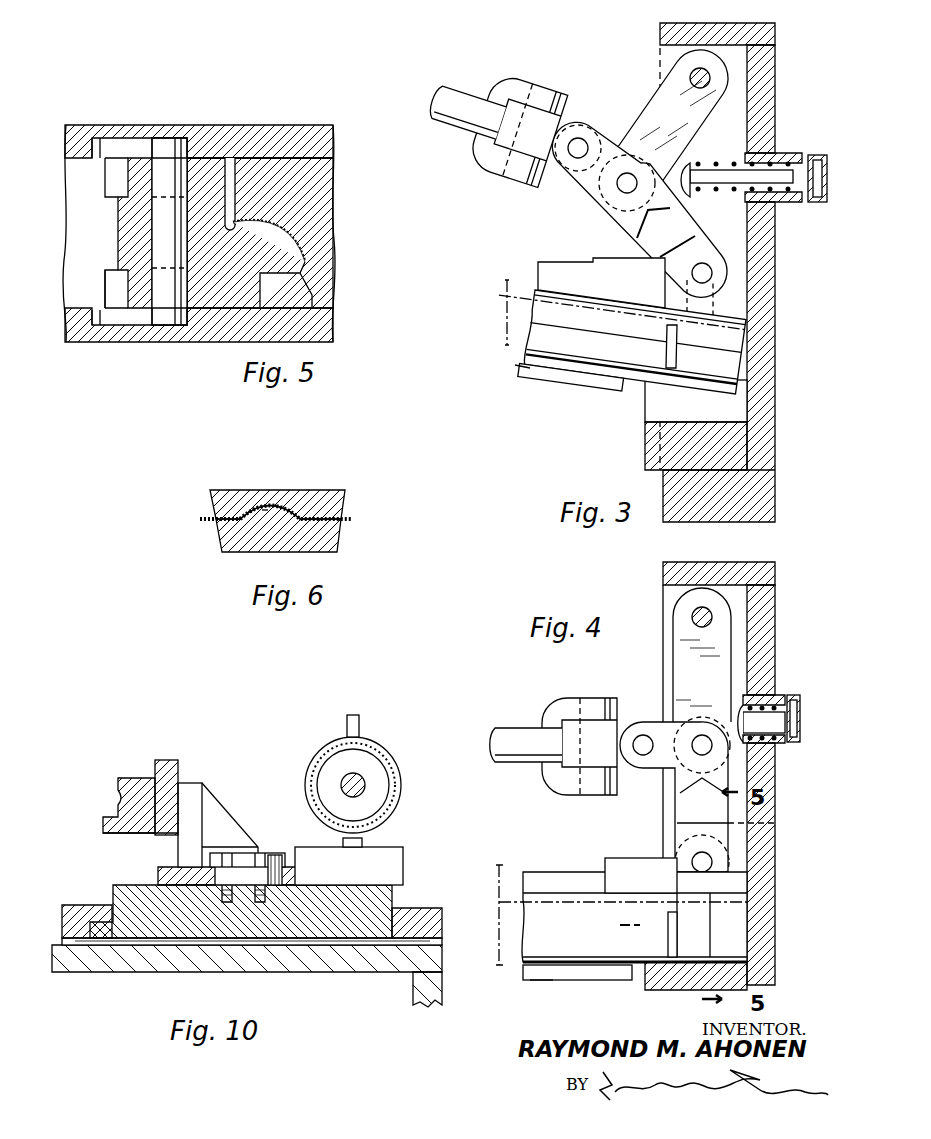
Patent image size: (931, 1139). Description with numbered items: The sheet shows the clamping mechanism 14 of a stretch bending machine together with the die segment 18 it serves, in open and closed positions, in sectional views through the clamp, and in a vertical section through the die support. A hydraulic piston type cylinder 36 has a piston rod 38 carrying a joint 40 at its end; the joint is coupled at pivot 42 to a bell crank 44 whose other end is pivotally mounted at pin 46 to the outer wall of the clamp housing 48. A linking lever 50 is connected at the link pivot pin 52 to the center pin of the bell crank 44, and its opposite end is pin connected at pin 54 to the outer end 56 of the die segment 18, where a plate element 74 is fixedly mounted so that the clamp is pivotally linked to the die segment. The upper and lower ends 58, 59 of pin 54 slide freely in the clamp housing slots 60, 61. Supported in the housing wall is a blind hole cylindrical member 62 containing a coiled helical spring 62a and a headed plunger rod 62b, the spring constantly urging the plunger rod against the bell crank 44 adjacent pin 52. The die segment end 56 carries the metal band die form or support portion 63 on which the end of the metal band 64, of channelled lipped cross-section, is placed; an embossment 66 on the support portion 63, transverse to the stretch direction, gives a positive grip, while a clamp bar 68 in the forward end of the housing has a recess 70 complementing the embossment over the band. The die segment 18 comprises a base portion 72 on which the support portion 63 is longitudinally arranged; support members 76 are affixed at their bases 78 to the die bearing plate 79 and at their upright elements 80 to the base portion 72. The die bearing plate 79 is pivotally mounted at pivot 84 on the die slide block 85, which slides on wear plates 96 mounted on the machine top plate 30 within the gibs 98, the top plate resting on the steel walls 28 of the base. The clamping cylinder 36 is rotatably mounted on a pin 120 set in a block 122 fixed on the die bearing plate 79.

In FIG. 5, the clamping mechanism 14 is at (261, 120).
In FIG. 3, the clamping mechanism 14 is at (784, 96).
In FIG. 4, the clamping mechanism 14 is at (784, 606).
In FIG. 3, the die segment 18 is at (527, 375).
In FIG. 4, the die segment 18 is at (550, 989).
In FIG. 10, the die segment 18 is at (175, 758).
In FIG. 10, the steel walls 28 is at (443, 988).
In FIG. 10, the top plate 30 is at (356, 970).
In FIG. 10, the hydraulic piston type cylinder 36 is at (368, 748).
In FIG. 3, the piston rod 38 is at (468, 86).
In FIG. 4, the piston rod 38 is at (503, 728).
In FIG. 10, the piston rod 38 is at (365, 780).
In FIG. 3, the joint 40 is at (525, 104).
In FIG. 4, the joint 40 is at (565, 698).
In FIG. 3, the pivot 42 is at (580, 138).
In FIG. 4, the pivot 42 is at (644, 735).
In FIG. 3, the bell crank 44 is at (642, 108).
In FIG. 4, the bell crank 44 is at (677, 650).
In FIG. 3, the pin 46 is at (695, 75).
In FIG. 4, the pin 46 is at (695, 617).
In FIG. 5, the clamp housing 48 is at (188, 132).
In FIG. 3, the clamp housing 48 is at (775, 395).
In FIG. 4, the clamp housing 48 is at (775, 655).
In FIG. 5, the linking lever 50 is at (78, 160).
In FIG. 3, the linking lever 50 is at (625, 222).
In FIG. 4, the linking lever 50 is at (675, 804).
In FIG. 3, the link pivot pin 52 is at (617, 187).
In FIG. 4, the link pivot pin 52 is at (703, 735).
In FIG. 5, the pin 54 is at (168, 130).
In FIG. 3, the pin 54 is at (708, 268).
In FIG. 4, the pin 54 is at (695, 858).
In FIG. 3, the outer end of die segment 56 is at (598, 380).
In FIG. 4, the outer end of die segment 56 is at (628, 983).
In FIG. 5, the upper end of pin 58 is at (160, 145).
In FIG. 5, the lower end of pin 59 is at (165, 317).
In FIG. 5, the clamp housing slot 60 is at (108, 140).
In FIG. 4, the clamp housing slot 60 is at (768, 827).
In FIG. 5, the clamp housing slot 61 is at (108, 327).
In FIG. 3, the cylindrical member 62 is at (790, 153).
In FIG. 4, the cylindrical member 62 is at (795, 695).
In FIG. 3, the coiled helical spring 62a is at (815, 158).
In FIG. 4, the coiled helical spring 62a is at (801, 713).
In FIG. 3, the headed plunger rod 62b is at (718, 162).
In FIG. 4, the headed plunger rod 62b is at (780, 742).
In FIG. 5, the metal band die form or support portion 63 is at (306, 262).
In FIG. 3, the metal band die form or support portion 63 is at (725, 343).
In FIG. 4, the metal band die form or support portion 63 is at (740, 918).
In FIG. 6, the metal band die form or support portion 63 is at (340, 545).
In FIG. 10, the metal band die form or support portion 63 is at (128, 790).
In FIG. 5, the metal band 64 is at (306, 222).
In FIG. 3, the metal band 64 is at (502, 299).
In FIG. 4, the metal band 64 is at (514, 904).
In FIG. 6, the metal band 64 is at (355, 519).
In FIG. 3, the embossment 66 is at (664, 345).
In FIG. 4, the embossment 66 is at (672, 962).
In FIG. 6, the embossment 66 is at (265, 512).
In FIG. 5, the clamp bar 68 is at (313, 170).
In FIG. 3, the clamp bar 68 is at (645, 445).
In FIG. 4, the clamp bar 68 is at (648, 990).
In FIG. 6, the clamp bar 68 is at (305, 492).
In FIG. 5, the recess 70 is at (233, 222).
In FIG. 6, the recess 70 is at (258, 505).
In FIG. 5, the base portion 72 is at (223, 300).
In FIG. 10, the base portion 72 is at (138, 825).
In FIG. 3, the plate element 74 is at (598, 263).
In FIG. 4, the plate element 74 is at (605, 864).
In FIG. 10, the support members 76 is at (225, 801).
In FIG. 10, the bases of support members 78 is at (236, 853).
In FIG. 10, the die bearing plate 79 is at (158, 878).
In FIG. 10, the upright elements 80 is at (190, 790).
In FIG. 10, the pivot 84 is at (276, 856).
In FIG. 10, the die slide block 85 is at (392, 895).
In FIG. 10, the wear plates 96 is at (442, 944).
In FIG. 10, the gibs 98 is at (72, 905).
In FIG. 10, the pin 120 is at (365, 840).
In FIG. 10, the block 122 is at (403, 852).